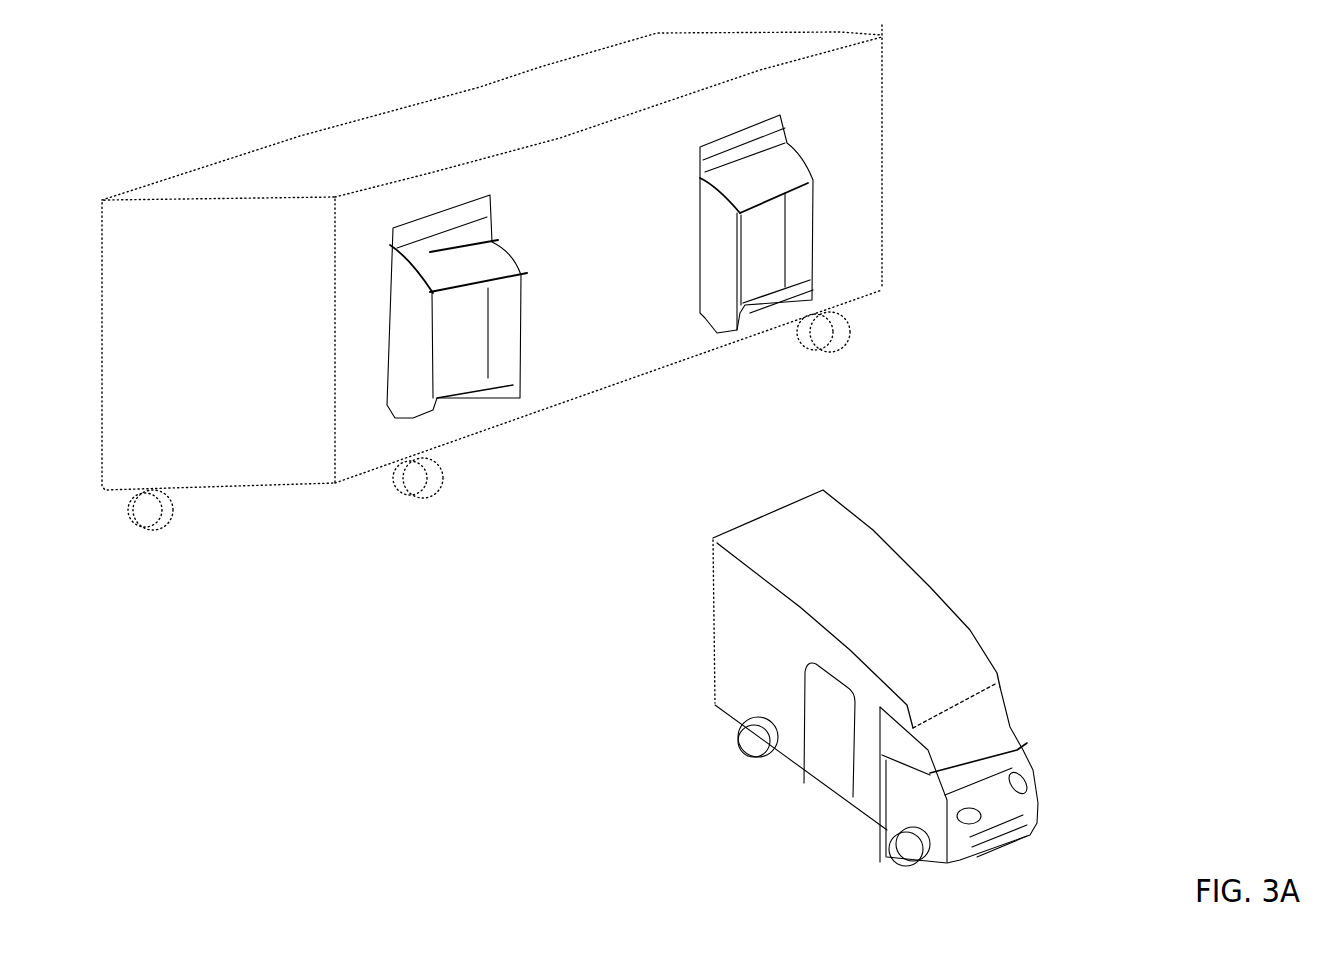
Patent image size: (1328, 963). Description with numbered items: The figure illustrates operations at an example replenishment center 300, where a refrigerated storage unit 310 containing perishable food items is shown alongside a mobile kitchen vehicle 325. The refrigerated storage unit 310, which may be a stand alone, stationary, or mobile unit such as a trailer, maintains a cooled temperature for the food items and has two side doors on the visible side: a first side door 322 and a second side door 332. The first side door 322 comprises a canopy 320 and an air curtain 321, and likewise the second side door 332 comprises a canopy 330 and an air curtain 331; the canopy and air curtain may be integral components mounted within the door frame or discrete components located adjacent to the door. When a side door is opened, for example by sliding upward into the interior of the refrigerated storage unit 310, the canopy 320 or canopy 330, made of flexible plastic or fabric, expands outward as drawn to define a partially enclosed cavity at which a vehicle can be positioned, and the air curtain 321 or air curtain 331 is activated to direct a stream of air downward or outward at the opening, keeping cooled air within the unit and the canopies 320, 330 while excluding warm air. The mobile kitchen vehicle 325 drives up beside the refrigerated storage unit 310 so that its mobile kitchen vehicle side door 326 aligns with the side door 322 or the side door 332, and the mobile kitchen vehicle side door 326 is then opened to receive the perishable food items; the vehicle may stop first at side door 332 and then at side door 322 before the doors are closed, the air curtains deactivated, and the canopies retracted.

The replenishment center 300 is at (1187, 70).
The refrigerated storage unit 310 is at (551, 274).
The canopy 320 is at (430, 272).
The air curtain 321 is at (413, 240).
The first side door 322 is at (427, 218).
The mobile kitchen vehicle 325 is at (849, 678).
The mobile kitchen vehicle side door 326 is at (818, 750).
The canopy 330 is at (765, 175).
The air curtain 331 is at (777, 138).
The second side door 332 is at (768, 122).